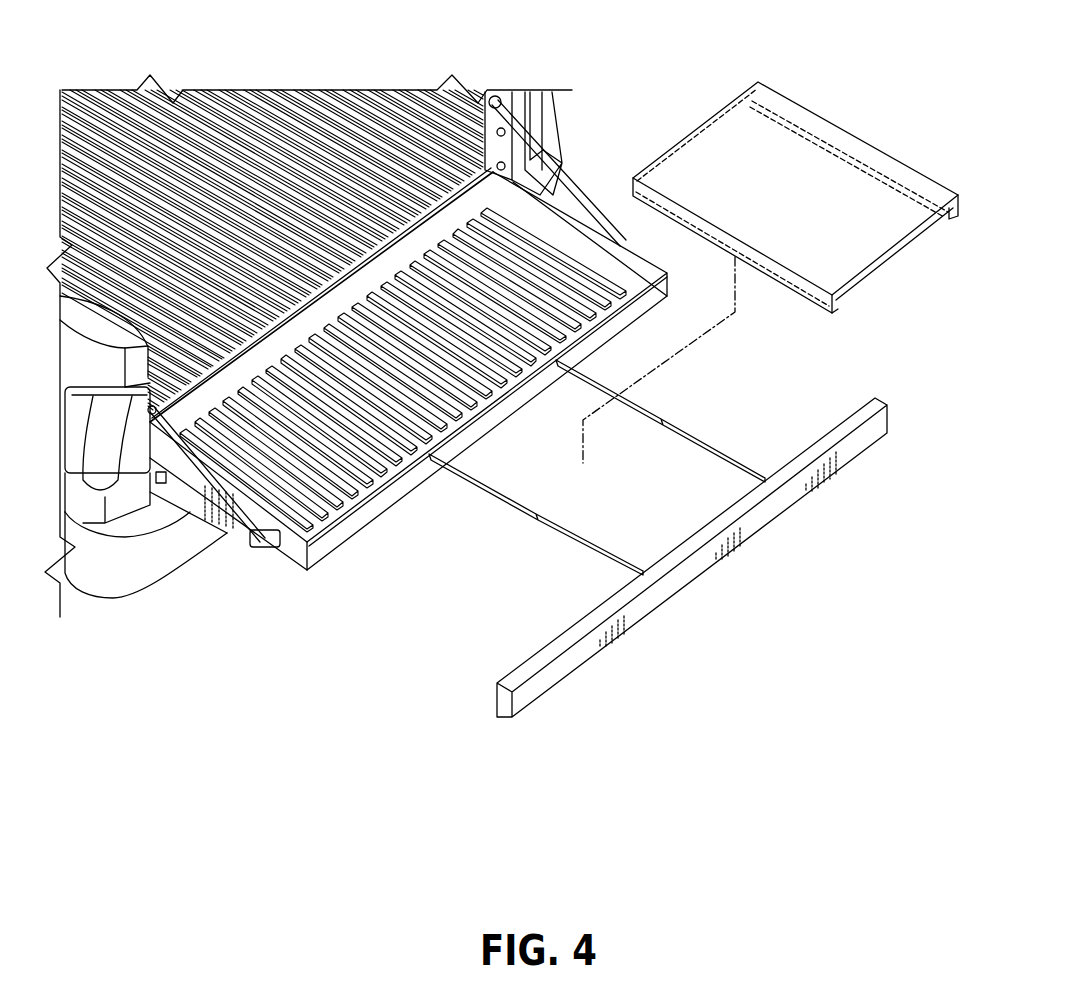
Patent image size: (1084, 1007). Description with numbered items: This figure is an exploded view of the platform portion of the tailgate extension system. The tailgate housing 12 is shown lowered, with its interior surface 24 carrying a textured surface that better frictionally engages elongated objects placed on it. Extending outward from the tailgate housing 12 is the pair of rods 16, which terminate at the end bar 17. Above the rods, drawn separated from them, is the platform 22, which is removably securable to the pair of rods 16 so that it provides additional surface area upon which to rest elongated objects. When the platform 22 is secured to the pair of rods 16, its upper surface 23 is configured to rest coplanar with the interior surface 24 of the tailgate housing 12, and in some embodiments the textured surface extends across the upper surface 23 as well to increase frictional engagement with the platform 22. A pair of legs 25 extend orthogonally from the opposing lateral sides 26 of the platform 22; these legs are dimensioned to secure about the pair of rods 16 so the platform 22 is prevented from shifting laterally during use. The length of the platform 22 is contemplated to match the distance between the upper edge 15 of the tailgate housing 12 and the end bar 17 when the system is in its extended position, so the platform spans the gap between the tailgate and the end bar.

The tailgate housing 12 is at (578, 240).
The upper edge 15 is at (377, 505).
The pair of rods 16 is at (520, 560).
The end bar 17 is at (665, 590).
The platform 22 is at (795, 184).
The upper surface 23 is at (813, 150).
The interior surface 24 is at (313, 508).
The pair of legs 25 is at (835, 303).
The opposing lateral sides 26 is at (904, 165).